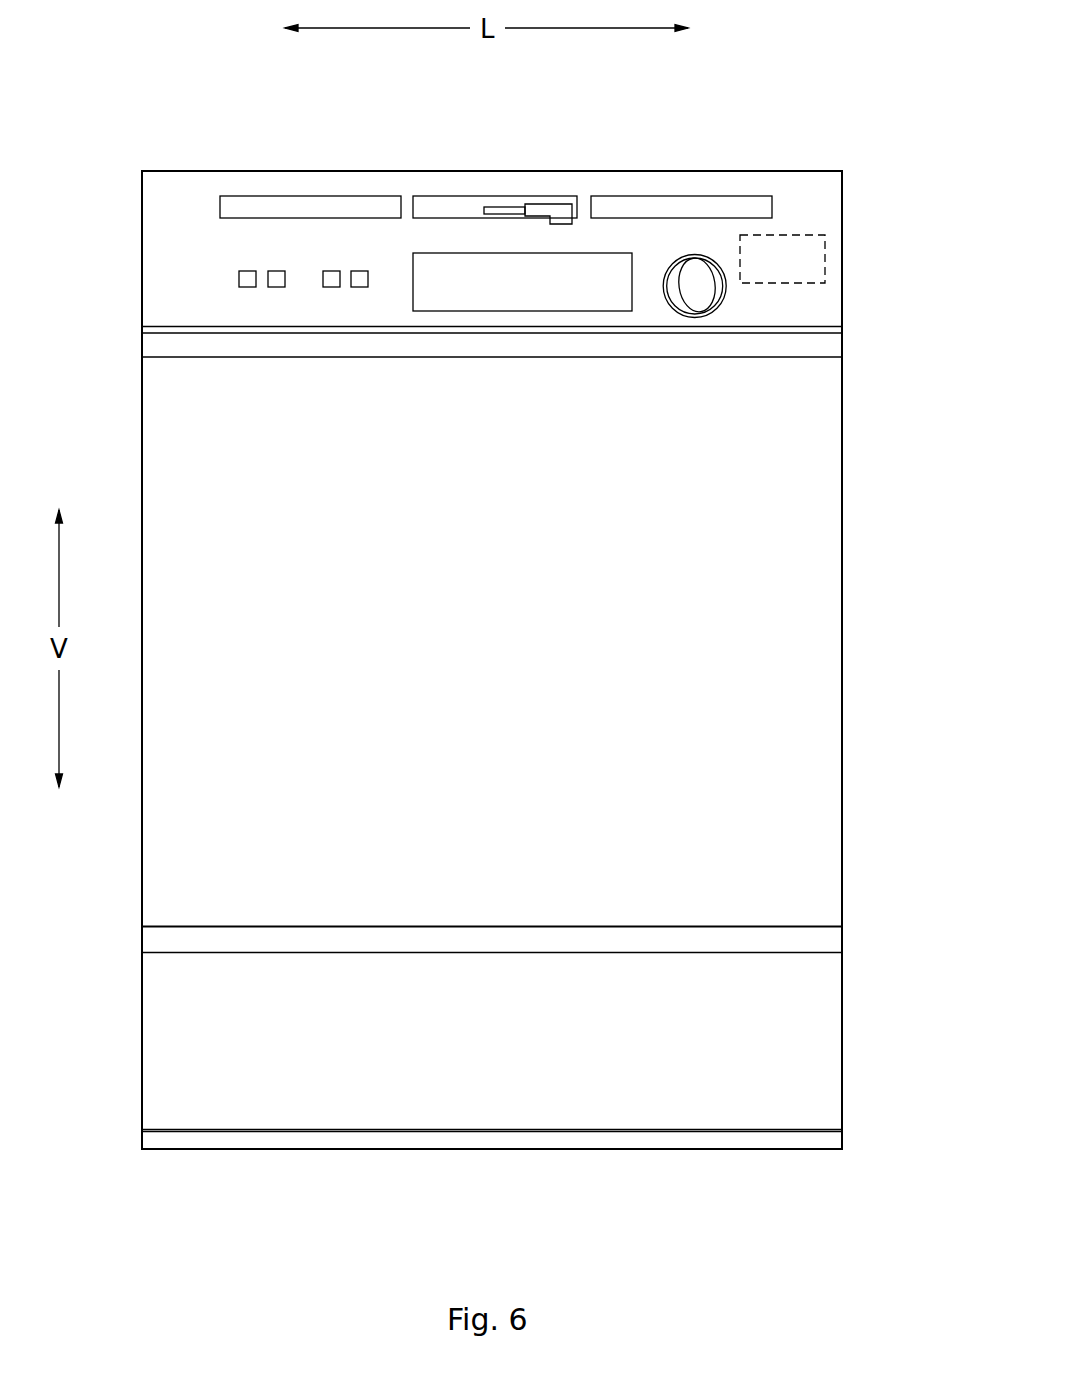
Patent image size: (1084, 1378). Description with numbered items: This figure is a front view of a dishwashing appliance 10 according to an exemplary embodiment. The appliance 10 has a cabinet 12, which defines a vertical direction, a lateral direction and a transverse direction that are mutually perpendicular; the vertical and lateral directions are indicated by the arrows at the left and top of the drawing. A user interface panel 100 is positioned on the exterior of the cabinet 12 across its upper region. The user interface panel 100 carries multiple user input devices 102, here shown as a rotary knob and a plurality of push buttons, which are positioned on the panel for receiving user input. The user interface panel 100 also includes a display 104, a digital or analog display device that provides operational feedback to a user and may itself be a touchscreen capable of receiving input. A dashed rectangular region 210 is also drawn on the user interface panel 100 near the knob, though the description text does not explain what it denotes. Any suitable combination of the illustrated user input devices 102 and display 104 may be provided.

The appliance 10 is at (755, 133).
The cabinet 12 is at (783, 620).
The user interface panel 100 is at (815, 223).
The user input device 102 is at (330, 272).
The display component 104 is at (493, 297).
The sensor / communication module 210 is at (825, 257).